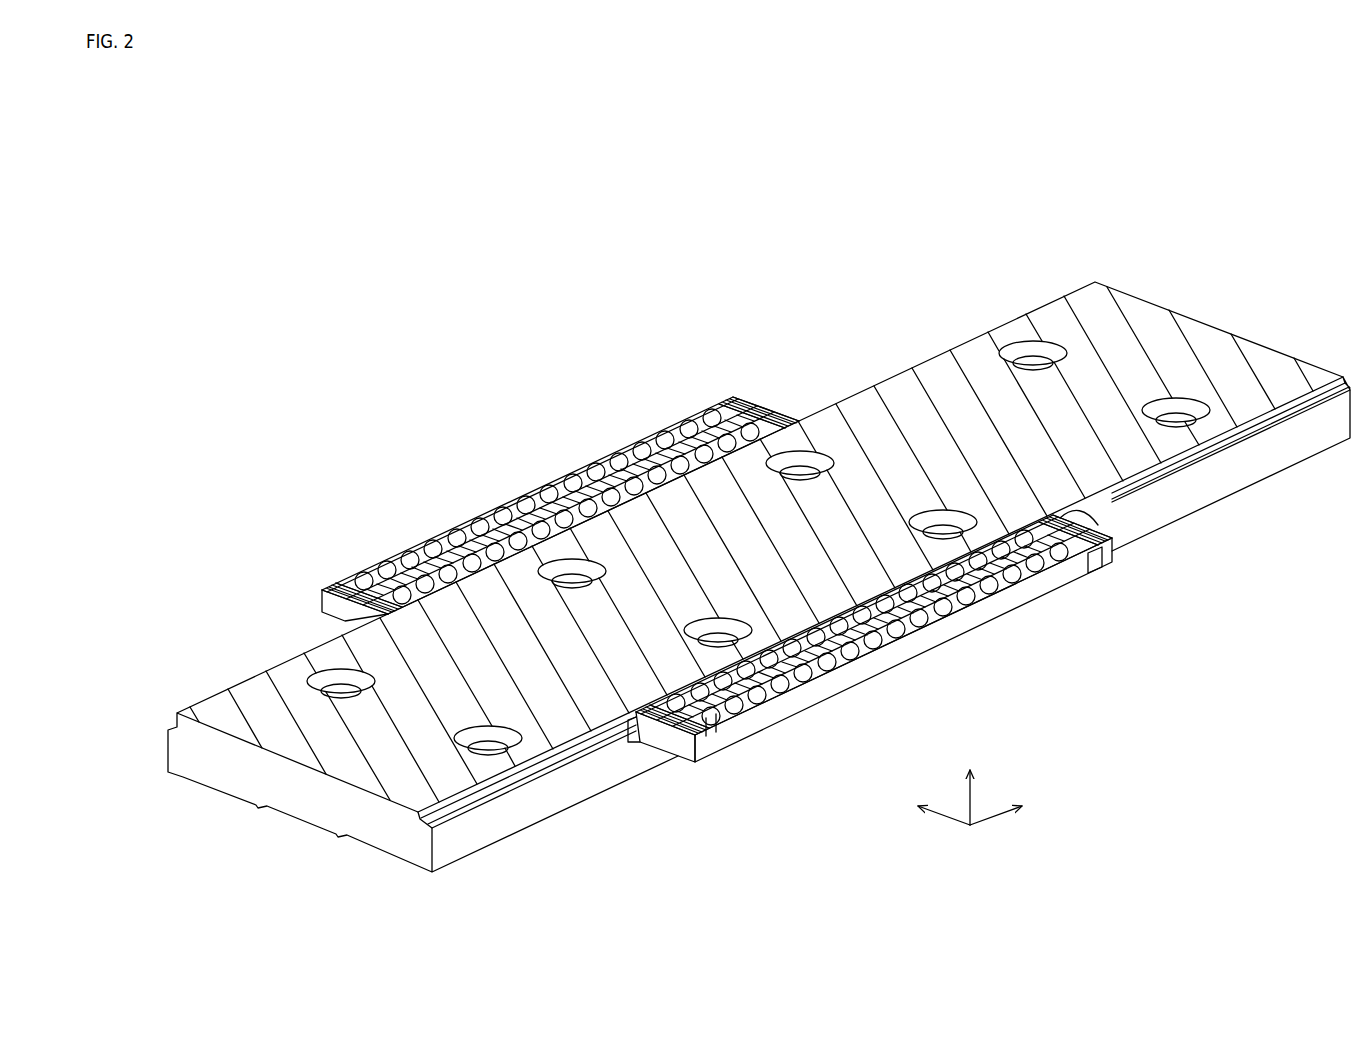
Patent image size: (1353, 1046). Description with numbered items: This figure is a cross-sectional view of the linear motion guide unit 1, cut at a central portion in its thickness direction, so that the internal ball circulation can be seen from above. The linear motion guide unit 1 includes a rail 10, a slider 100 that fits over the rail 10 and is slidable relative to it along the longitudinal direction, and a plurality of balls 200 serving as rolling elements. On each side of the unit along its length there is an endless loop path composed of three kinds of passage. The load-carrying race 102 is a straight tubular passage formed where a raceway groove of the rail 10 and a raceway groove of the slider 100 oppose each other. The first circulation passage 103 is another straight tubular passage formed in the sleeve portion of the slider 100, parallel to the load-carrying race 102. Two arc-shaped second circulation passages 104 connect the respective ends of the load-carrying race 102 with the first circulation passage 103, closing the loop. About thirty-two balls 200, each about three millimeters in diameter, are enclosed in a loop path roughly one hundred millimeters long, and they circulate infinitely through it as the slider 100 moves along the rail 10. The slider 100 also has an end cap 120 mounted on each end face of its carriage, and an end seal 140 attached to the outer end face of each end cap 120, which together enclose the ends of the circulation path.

The linear motion guide unit 1 is at (933, 282).
The rail 10 is at (368, 830).
The slider 100 is at (921, 648).
The load-carrying race 102 is at (767, 467).
The first circulation passage 103 is at (648, 446).
The second circulation passage 104 is at (333, 610).
The end cap 120 is at (728, 746).
The end seal 140 is at (688, 755).
The ball 200 is at (433, 556).